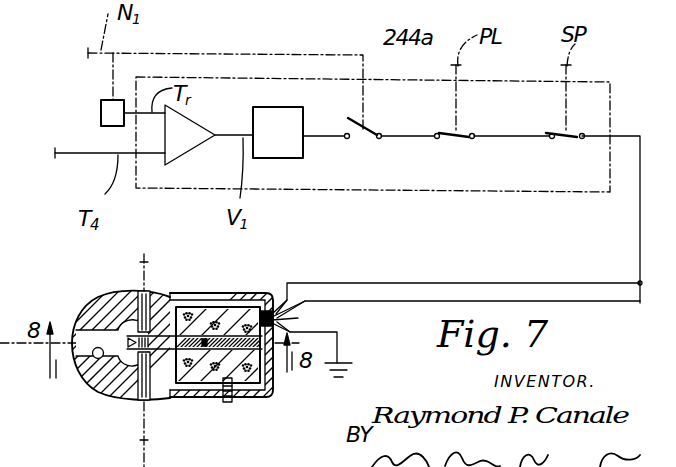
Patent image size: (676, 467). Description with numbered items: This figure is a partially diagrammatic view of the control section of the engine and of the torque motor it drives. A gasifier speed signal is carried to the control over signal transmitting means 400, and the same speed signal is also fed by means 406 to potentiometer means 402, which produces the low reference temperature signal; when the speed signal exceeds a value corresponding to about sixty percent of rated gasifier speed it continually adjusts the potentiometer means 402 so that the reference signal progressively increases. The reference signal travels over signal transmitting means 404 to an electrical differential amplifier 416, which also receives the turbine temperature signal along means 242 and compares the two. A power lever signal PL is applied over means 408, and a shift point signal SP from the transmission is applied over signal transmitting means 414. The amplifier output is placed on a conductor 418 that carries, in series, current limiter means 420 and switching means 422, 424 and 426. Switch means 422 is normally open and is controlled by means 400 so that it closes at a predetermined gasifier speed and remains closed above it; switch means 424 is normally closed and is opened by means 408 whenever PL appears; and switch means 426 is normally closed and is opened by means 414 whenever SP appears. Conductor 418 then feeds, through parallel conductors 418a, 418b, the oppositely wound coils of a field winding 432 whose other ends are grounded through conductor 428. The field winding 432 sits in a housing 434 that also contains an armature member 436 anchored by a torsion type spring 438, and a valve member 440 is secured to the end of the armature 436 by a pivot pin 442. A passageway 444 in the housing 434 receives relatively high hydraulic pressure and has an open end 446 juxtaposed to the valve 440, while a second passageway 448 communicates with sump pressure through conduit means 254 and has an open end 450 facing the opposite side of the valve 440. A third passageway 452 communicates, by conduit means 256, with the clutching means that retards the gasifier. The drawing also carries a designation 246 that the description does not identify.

The signal transmitting means 400 is at (240, 54).
The potentiometer means 402 is at (104, 100).
The signal transmitting means 404 is at (128, 116).
The signal transmitting means 406 is at (112, 61).
The signal transmitting means 408 is at (457, 118).
The signal transmitting means 414 is at (567, 110).
The electrical differential amplifier 416 is at (219, 133).
The conductor 418 is at (226, 143).
The parallel conductor 418a is at (435, 283).
The parallel conductor 418b is at (588, 303).
The current limiter means 420 is at (290, 128).
The switching means 422 is at (366, 140).
The switch means 424 is at (440, 140).
The switch means 426 is at (557, 140).
The conductor 428 is at (339, 347).
The field winding 432 is at (266, 392).
The housing 434 is at (266, 310).
The armature member 436 is at (196, 334).
The torsion type spring 438 is at (205, 347).
The valve member 440 is at (123, 310).
The pivot pin 442 is at (96, 358).
The passageway 444 is at (139, 401).
The open end 446 is at (147, 397).
The second passageway 448 is at (139, 291).
The open end 450 is at (168, 296).
The third passageway 452 is at (92, 346).
The signal transmitting means 242 is at (82, 154).
The sensor assembly 246 is at (256, 423).
The conduit means 254 is at (147, 256).
The conduit means 256 is at (74, 385).